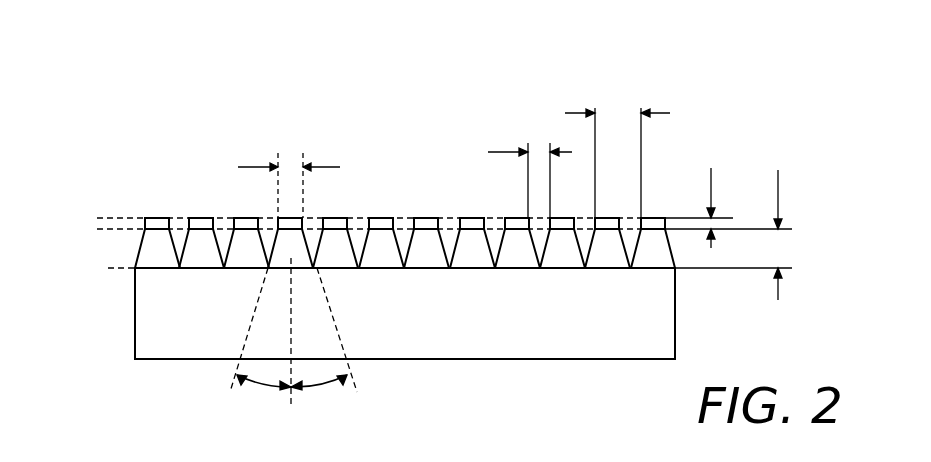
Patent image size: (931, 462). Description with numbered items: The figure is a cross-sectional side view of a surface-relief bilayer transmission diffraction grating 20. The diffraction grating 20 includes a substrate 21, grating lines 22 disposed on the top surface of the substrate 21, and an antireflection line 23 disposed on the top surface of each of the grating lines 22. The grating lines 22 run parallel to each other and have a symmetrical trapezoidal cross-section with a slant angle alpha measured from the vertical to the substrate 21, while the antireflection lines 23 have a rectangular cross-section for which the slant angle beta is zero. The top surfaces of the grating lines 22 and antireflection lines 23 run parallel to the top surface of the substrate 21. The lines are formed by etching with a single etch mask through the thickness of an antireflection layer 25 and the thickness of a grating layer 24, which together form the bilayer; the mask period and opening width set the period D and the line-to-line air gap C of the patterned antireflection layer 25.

The surface-relief bilayer transmission diffraction grating 20 is at (462, 48).
The substrate 21 is at (597, 323).
The grating lines 22 is at (438, 228).
The antireflection line 23 is at (380, 219).
The grating layer 24 is at (97, 229).
The antireflection layer 25 is at (97, 218).